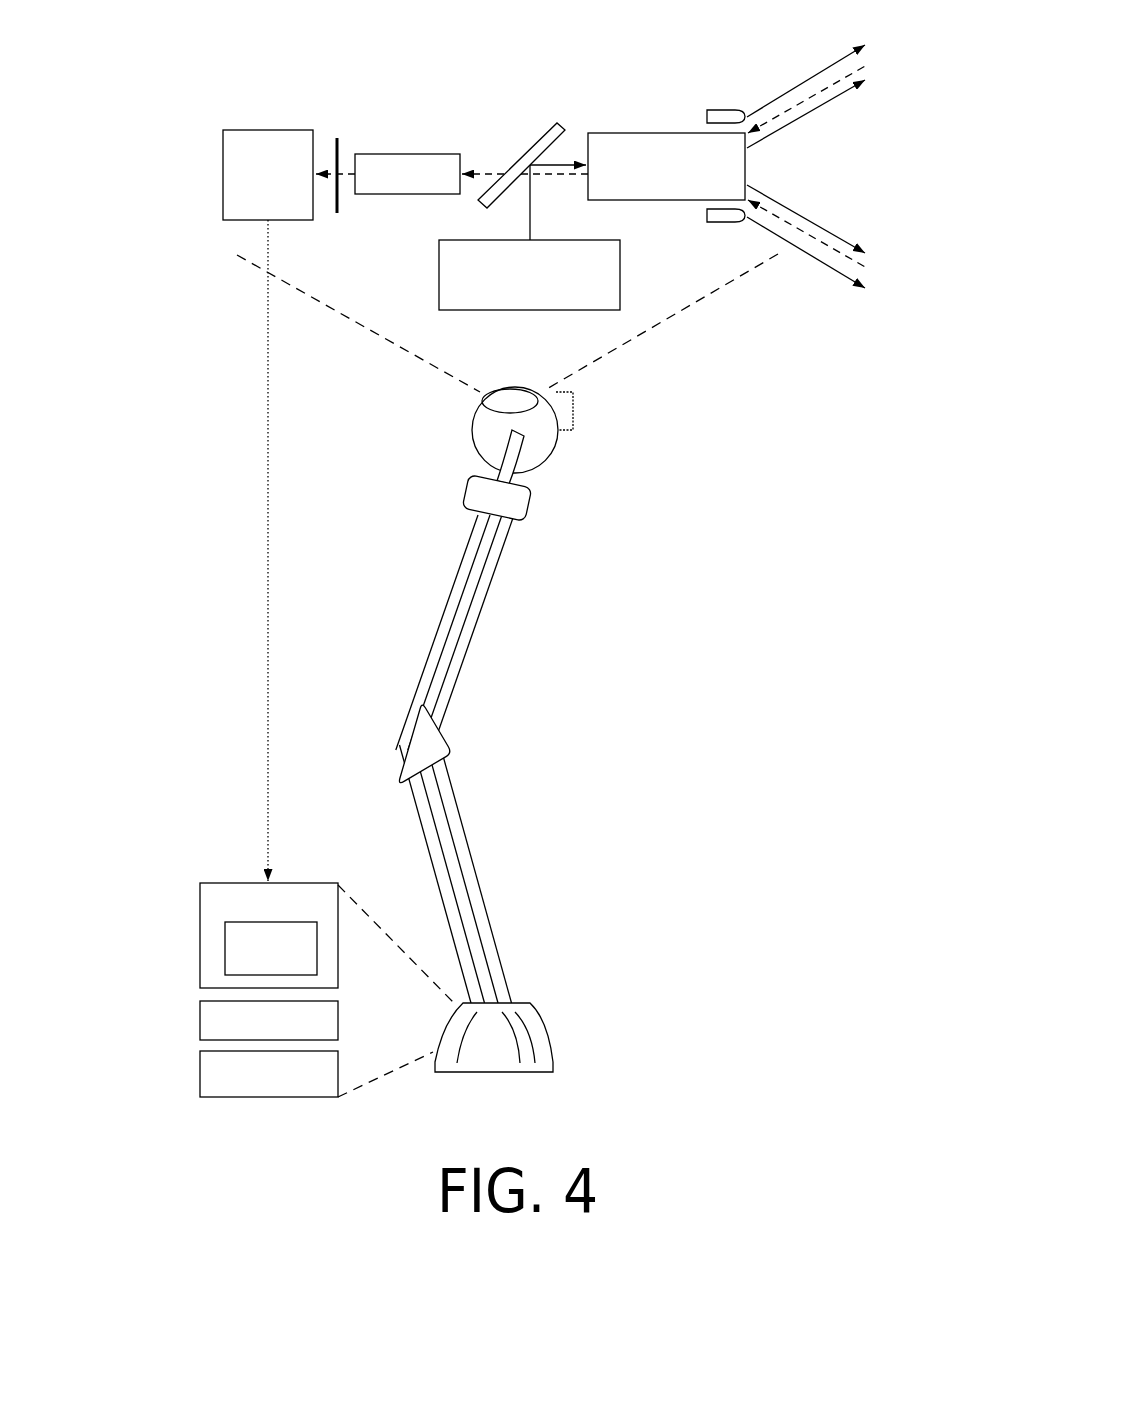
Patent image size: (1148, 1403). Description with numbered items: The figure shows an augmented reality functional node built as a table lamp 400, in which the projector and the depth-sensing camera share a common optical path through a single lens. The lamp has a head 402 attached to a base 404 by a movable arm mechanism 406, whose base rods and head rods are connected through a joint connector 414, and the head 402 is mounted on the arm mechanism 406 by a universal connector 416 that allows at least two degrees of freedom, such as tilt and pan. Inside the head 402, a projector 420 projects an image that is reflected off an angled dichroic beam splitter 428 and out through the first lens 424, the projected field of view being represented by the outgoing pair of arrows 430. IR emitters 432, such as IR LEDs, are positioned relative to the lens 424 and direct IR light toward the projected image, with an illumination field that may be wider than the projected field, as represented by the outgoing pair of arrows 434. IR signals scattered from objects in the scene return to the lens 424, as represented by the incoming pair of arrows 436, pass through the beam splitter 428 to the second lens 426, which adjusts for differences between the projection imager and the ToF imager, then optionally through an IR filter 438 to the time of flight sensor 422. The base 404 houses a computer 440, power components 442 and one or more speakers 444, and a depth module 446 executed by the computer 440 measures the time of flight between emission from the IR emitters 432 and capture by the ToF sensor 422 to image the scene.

The table lamp 400 is at (702, 615).
The head 402 is at (558, 460).
The base 404 is at (557, 1040).
The arm mechanism 406 is at (392, 722).
The joint connector 414 is at (433, 752).
The universal connector 416 is at (455, 488).
The projector 420 is at (546, 297).
The time of flight (ToF) sensor 422 is at (285, 209).
The first lens 424 is at (683, 191).
The second lens 426 is at (448, 187).
The beam splitter 428 is at (548, 123).
The outgoing pair of arrows 430 is at (822, 168).
The IR emitter 432 is at (713, 267).
The outgoing pair of arrows 434 is at (820, 70).
The incoming pair of arrows 436 is at (797, 107).
The IR filter 438 is at (337, 213).
The computer 440 is at (200, 903).
The power components 442 is at (200, 1020).
The speakers 444 is at (200, 1068).
The depth module 446 is at (225, 945).